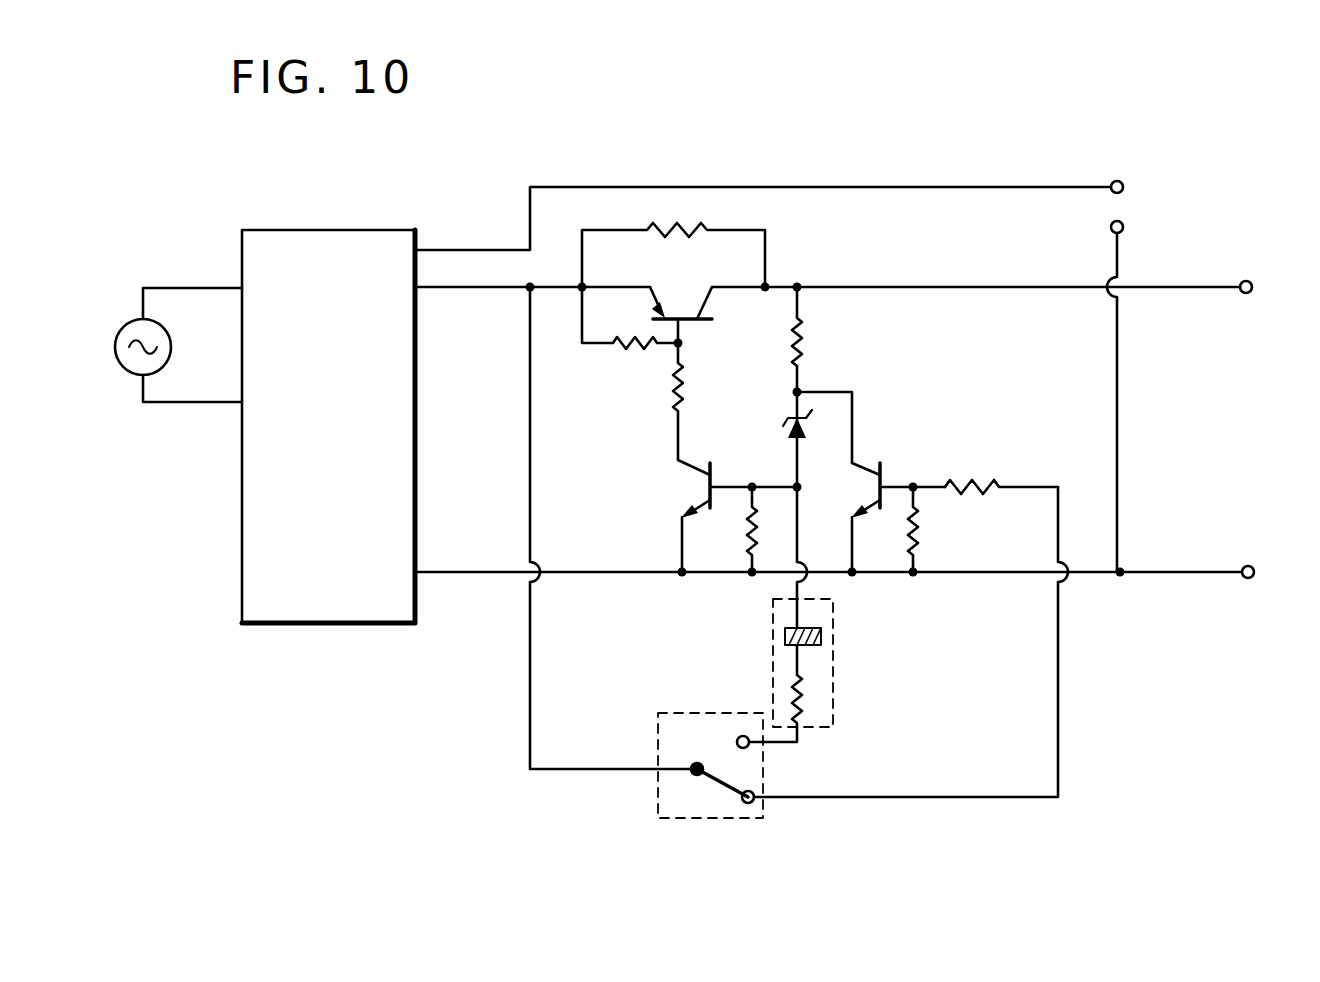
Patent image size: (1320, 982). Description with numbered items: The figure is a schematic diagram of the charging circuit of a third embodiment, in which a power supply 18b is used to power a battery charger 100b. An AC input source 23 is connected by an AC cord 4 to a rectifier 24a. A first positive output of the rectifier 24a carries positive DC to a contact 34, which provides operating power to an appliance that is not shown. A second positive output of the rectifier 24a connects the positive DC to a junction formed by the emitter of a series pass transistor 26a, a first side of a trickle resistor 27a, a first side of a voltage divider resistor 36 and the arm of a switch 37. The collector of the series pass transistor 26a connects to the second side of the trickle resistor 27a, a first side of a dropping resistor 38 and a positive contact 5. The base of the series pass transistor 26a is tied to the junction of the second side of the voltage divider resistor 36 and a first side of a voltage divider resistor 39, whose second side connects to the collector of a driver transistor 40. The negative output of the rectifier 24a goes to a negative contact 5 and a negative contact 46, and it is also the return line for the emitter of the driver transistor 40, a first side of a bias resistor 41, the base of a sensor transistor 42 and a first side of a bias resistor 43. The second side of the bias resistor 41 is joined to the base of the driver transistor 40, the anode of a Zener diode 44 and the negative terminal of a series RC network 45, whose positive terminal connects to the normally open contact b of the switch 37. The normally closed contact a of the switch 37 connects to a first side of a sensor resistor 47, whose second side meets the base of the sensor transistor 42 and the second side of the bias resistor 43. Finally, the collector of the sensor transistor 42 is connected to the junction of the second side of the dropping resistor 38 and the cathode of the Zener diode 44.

The AC cord 4 is at (172, 288).
The AC input source 23 is at (123, 367).
The rectifier 24a is at (380, 628).
The power supply 18b is at (695, 160).
The trickle resistor 27a is at (702, 225).
The series pass transistor 26a is at (687, 314).
The voltage divider resistor 36 is at (636, 353).
The voltage divider resistor 39 is at (690, 383).
The dropping resistor 38 is at (810, 352).
The Zener diode 44 is at (790, 430).
The driver transistor 40 is at (703, 482).
The bias resistor 41 is at (747, 522).
The sensor transistor 42 is at (890, 473).
The bias resistor 43 is at (923, 537).
The sensor resistor 47 is at (980, 480).
The series RC network 45 is at (835, 650).
The switch 37 is at (655, 790).
The contact 34 is at (1123, 184).
The negative contact 46 is at (1123, 225).
The contacts 5 is at (1248, 293).
The battery charger 100b is at (1078, 731).